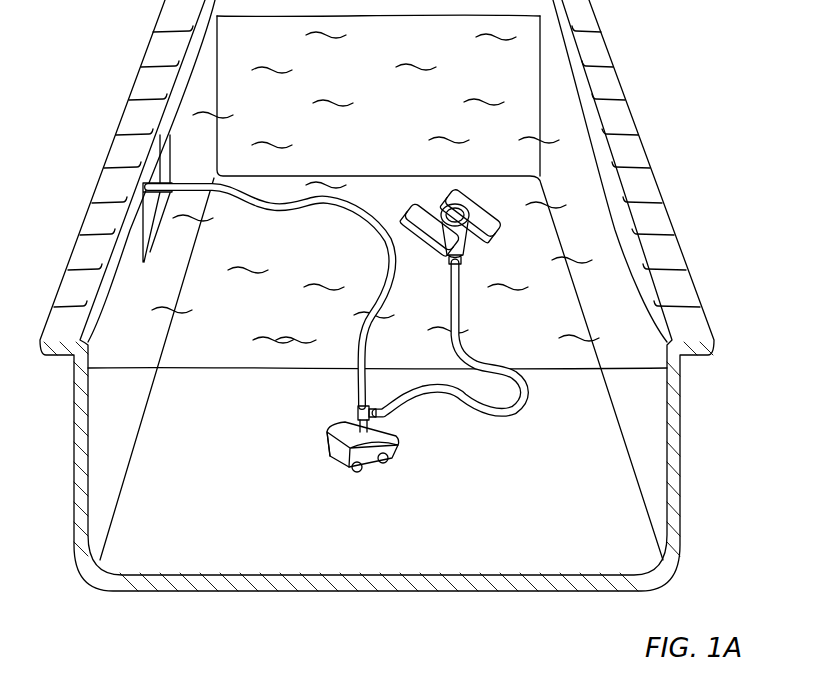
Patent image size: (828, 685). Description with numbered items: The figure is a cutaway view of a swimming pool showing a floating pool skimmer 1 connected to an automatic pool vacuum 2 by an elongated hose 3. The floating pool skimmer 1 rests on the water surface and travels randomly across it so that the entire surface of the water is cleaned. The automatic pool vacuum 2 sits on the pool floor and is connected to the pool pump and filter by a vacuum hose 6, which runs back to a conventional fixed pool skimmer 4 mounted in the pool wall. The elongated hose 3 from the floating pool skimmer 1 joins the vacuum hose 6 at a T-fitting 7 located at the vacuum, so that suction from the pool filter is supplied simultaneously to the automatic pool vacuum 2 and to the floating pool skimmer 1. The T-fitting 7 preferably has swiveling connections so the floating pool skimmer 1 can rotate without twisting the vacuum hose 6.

The floating pool skimmer 1 is at (413, 198).
The automatic pool vacuum 2 is at (335, 458).
The elongated hose 3 is at (493, 423).
The fixed pool skimmer 4 is at (166, 184).
The vacuum hose 6 is at (262, 224).
The T-fitting 7 is at (357, 412).